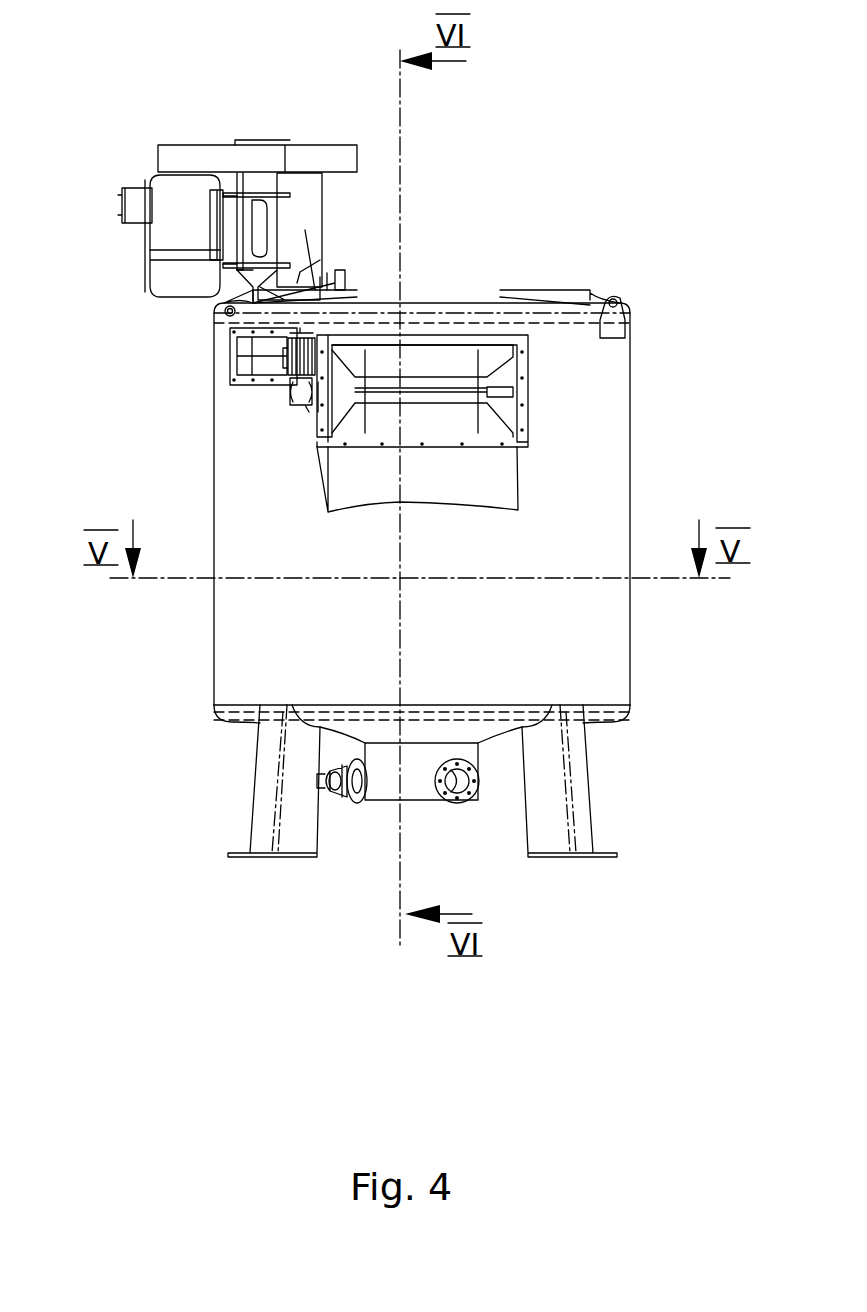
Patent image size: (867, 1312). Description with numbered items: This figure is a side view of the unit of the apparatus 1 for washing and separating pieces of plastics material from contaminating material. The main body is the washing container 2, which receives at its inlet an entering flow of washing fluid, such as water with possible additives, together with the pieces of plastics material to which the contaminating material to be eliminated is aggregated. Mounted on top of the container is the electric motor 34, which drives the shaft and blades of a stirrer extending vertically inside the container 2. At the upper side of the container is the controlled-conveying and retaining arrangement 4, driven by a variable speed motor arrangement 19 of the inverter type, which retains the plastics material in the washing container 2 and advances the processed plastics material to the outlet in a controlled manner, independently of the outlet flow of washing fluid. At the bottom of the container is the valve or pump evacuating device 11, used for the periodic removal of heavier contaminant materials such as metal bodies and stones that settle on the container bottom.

The apparatus 1 is at (644, 132).
The washing container 2 is at (615, 412).
The controlled-conveying and retaining arrangement 4 is at (508, 379).
The evacuating device 11 is at (377, 795).
The variable speed motor arrangement 19 is at (258, 352).
The electric motor 34 is at (172, 236).